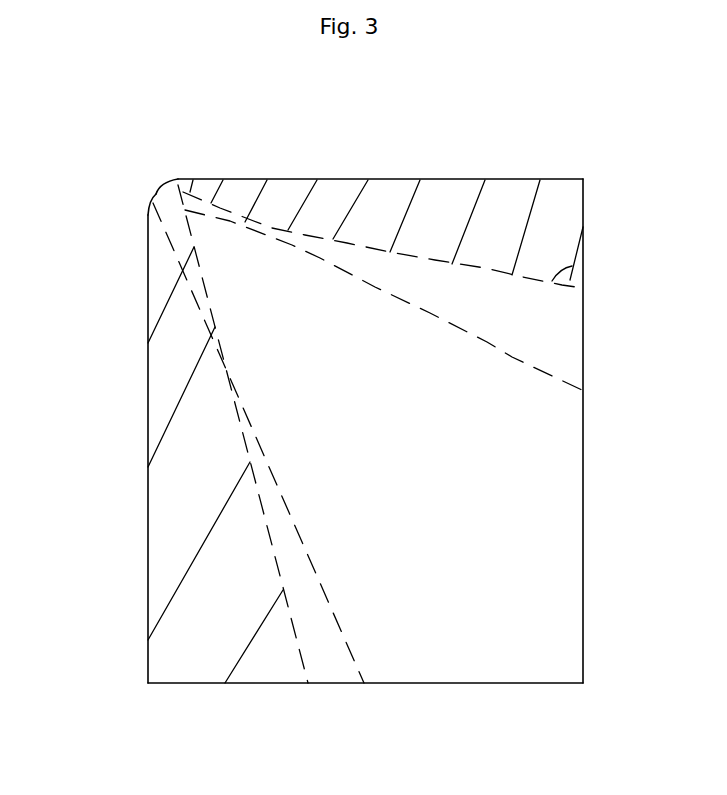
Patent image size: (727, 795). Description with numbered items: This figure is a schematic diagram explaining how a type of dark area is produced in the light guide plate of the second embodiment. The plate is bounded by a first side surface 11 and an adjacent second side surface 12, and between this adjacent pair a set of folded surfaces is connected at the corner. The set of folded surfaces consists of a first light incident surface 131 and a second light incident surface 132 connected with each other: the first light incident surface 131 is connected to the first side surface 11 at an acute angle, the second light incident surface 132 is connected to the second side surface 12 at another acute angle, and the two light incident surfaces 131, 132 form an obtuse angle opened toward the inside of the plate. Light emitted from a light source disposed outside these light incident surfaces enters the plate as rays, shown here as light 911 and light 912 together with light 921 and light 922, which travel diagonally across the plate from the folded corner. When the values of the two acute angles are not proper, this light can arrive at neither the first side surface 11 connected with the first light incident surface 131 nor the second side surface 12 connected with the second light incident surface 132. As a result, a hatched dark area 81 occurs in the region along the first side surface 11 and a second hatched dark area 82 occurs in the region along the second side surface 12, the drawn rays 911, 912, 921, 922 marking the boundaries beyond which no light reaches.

The first side surface 11 is at (340, 179).
The second side surface 12 is at (148, 382).
The first light incident surface 131 is at (165, 183).
The second light incident surface 132 is at (153, 203).
The dark area 81 is at (433, 198).
The dark area 82 is at (160, 472).
The light 911 is at (430, 313).
The light 912 is at (277, 557).
The light 921 is at (552, 281).
The light 922 is at (345, 652).